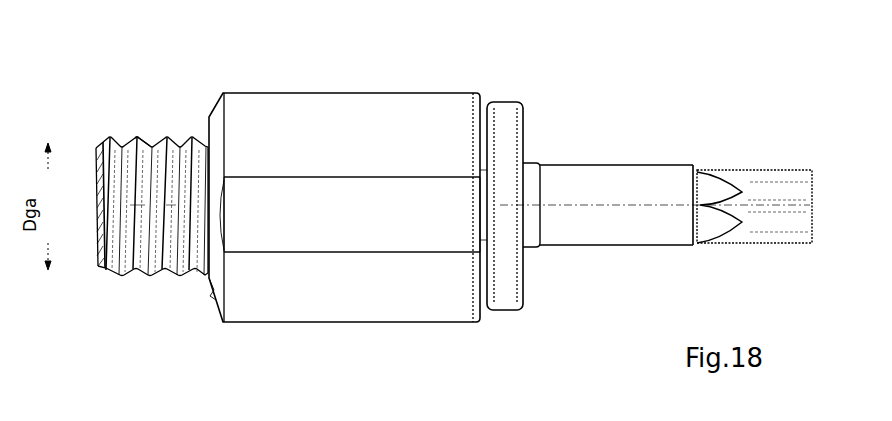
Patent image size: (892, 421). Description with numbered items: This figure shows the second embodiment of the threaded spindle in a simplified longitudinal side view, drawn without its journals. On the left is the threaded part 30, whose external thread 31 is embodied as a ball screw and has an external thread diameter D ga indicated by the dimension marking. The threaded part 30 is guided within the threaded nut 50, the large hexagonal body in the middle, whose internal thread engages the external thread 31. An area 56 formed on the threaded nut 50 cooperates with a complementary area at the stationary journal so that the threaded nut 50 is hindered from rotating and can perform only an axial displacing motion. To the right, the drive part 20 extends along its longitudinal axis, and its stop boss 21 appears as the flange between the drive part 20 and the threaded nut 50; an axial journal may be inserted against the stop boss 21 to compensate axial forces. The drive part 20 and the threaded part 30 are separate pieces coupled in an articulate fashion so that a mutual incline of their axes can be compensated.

The drive part 20 is at (607, 183).
The stop boss 21 is at (503, 312).
The threaded part 30 is at (105, 135).
The thread 31 is at (145, 137).
The threaded nut 50 is at (373, 127).
The area 56 is at (342, 220).